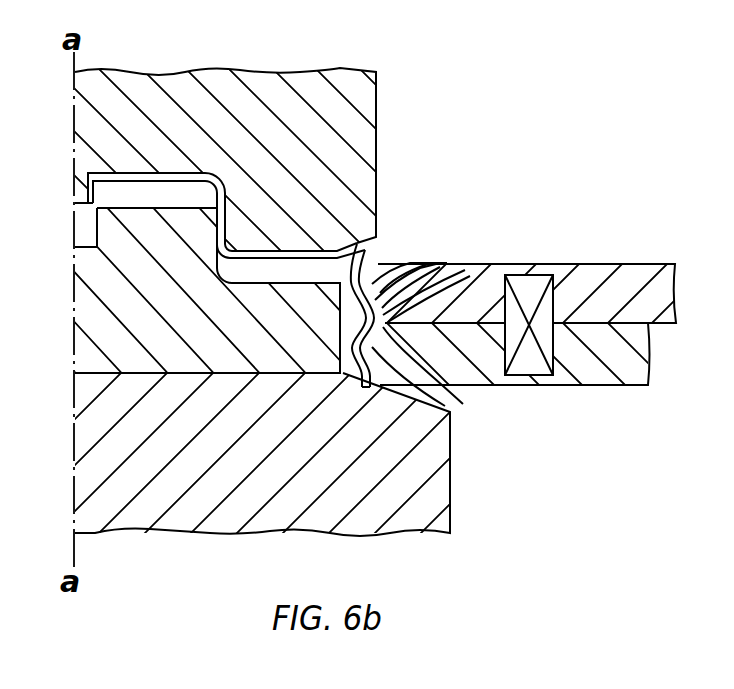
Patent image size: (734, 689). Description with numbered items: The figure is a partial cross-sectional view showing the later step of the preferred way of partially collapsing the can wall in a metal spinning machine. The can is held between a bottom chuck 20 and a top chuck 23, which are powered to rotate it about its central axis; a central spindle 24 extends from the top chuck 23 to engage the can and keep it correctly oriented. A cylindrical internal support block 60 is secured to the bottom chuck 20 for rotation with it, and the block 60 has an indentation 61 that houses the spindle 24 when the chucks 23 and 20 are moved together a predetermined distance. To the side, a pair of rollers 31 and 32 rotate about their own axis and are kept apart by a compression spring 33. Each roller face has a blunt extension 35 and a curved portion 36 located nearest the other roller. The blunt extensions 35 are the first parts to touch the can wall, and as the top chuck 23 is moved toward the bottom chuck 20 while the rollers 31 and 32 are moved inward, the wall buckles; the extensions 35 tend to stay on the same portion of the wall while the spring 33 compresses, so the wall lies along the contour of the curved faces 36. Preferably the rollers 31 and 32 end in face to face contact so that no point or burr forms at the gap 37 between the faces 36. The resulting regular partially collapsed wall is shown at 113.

The bottom chuck 20 is at (253, 507).
The top chuck 23 is at (264, 138).
The central spindle 24 is at (88, 176).
The roller 31 is at (657, 296).
The roller 32 is at (637, 348).
The compression spring 33 is at (538, 287).
The blunt extension 35 is at (368, 252).
The curved portion 36 is at (430, 263).
The gap 37 is at (472, 266).
The cylindrical internal support block 60 is at (144, 330).
The indentation 61 is at (83, 222).
The partially collapsed wall 113 is at (418, 262).